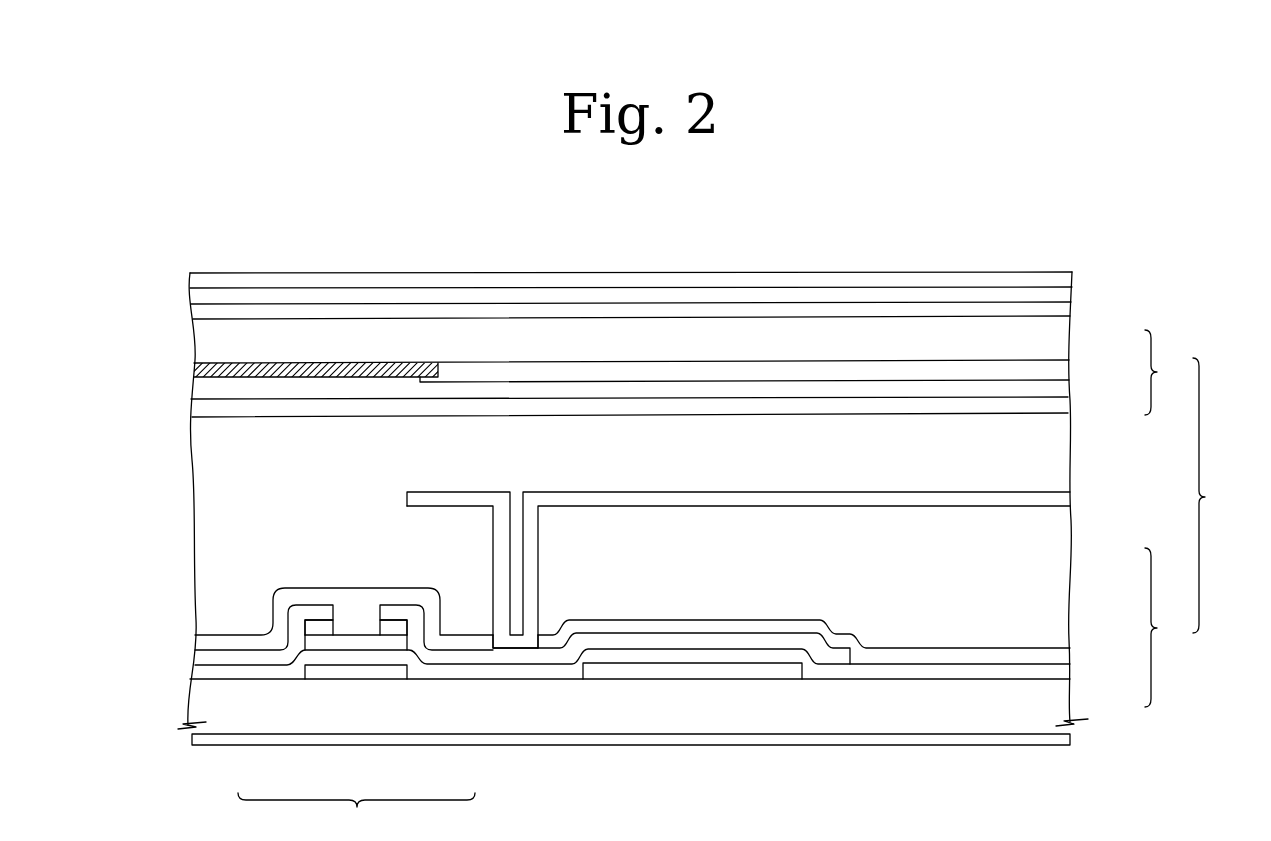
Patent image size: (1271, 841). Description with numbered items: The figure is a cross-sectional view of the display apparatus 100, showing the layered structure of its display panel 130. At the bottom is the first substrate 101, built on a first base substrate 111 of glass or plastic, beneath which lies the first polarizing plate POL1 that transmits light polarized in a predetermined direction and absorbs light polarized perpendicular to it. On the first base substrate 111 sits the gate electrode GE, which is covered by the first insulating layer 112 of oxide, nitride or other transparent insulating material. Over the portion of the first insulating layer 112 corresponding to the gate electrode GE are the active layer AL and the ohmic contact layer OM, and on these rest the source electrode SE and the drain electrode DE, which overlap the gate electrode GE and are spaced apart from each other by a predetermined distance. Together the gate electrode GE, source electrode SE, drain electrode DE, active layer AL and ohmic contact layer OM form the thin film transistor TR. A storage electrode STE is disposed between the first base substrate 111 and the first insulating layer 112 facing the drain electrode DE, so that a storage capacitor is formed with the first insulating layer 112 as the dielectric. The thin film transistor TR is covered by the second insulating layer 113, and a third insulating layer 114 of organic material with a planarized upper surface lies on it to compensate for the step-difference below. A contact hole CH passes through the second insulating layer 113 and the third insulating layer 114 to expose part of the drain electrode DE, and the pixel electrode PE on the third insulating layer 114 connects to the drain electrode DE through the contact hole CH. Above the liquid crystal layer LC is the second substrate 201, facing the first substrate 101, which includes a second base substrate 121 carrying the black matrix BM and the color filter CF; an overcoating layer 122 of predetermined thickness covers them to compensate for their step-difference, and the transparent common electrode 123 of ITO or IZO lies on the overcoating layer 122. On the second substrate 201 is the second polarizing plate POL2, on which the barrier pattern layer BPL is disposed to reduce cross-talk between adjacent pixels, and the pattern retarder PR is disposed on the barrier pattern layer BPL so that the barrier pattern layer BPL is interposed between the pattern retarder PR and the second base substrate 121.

The display apparatus 100 is at (1067, 236).
The pattern retarder PR is at (1058, 279).
The barrier pattern layer BPL is at (1058, 293).
The second polarizing plate POL2 is at (1058, 310).
The second base substrate 121 is at (1058, 338).
The overcoating layer 122 is at (1060, 390).
The common electrode 123 is at (1058, 402).
The second substrate 201 is at (1171, 372).
The liquid crystal layer LC is at (1058, 437).
The display panel 130 is at (1222, 495).
The black matrix BM is at (303, 370).
The color filter CF is at (503, 370).
The pixel electrode PE is at (886, 496).
The contact hole CH is at (547, 562).
The third insulating layer 114 is at (1058, 557).
The first substrate 101 is at (1173, 627).
The second insulating layer 113 is at (1058, 652).
The first insulating layer 112 is at (1058, 677).
The first base substrate 111 is at (1058, 698).
The first polarizing plate POL1 is at (1060, 738).
The source electrode SE is at (255, 658).
The ohmic contact layer OM is at (320, 630).
The gate electrode GE is at (355, 673).
The active layer AL is at (390, 643).
The drain electrode DE is at (462, 658).
The thin film transistor TR is at (356, 814).
The storage electrode STE is at (693, 680).